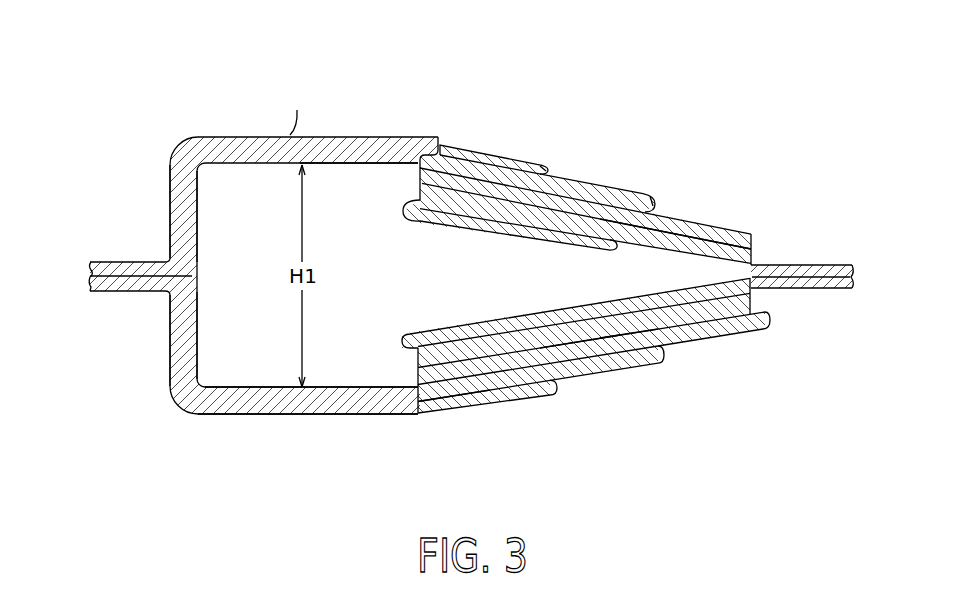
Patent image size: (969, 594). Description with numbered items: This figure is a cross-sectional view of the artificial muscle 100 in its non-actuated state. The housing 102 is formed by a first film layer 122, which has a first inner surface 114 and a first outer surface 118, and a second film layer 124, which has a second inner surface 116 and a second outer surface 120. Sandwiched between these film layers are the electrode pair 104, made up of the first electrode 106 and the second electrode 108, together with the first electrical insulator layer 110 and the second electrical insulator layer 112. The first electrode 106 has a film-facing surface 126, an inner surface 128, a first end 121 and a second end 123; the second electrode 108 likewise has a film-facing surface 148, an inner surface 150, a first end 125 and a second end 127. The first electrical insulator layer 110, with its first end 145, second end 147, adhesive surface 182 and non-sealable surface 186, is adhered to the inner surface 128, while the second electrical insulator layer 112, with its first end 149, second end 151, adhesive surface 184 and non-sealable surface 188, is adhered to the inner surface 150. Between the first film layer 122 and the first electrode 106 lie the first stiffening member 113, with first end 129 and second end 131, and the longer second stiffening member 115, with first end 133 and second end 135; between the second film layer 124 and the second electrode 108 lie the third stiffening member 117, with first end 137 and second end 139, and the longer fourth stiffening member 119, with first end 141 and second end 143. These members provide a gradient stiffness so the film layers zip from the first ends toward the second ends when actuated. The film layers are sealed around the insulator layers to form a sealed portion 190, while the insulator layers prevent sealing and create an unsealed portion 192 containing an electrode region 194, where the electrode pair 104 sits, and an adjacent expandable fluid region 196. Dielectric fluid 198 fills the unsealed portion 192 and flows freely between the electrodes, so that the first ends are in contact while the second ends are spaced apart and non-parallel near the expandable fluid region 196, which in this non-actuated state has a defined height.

The artificial muscle 100 is at (137, 95).
The housing 102 is at (213, 127).
The electrode pair 104 is at (785, 333).
The first electrode 106 is at (713, 320).
The second electrode 108 is at (735, 235).
The first electrical insulator layer 110 is at (491, 292).
The second electrical insulator layer 112 is at (450, 240).
The first stiffening member 113 is at (472, 390).
The first inner surface 114 is at (310, 392).
The second stiffening member 115 is at (513, 367).
The second inner surface 116 is at (322, 160).
The third stiffening member 117 is at (523, 170).
The first outer surface 118 is at (215, 416).
The fourth stiffening member 119 is at (610, 192).
The second outer surface 120 is at (304, 249).
The first end 121 is at (727, 338).
The first film layer 122 is at (242, 432).
The second end 123 is at (408, 362).
The second film layer 124 is at (263, 137).
The first end 125 is at (753, 240).
The film-facing surface 126 is at (687, 330).
The second end 127 is at (403, 211).
The inner surface 128 is at (722, 289).
The first end 129 is at (540, 382).
The second end 131 is at (415, 392).
The first end 133 is at (653, 347).
The second end 135 is at (418, 380).
The first end 137 is at (540, 172).
The second end 139 is at (438, 148).
The first end 141 is at (655, 205).
The second end 143 is at (420, 175).
The first end 145 is at (753, 296).
The second end 147 is at (195, 275).
The film-facing surface 148 is at (703, 220).
The first end 149 is at (752, 262).
The inner surface 150 is at (611, 250).
The second end 151 is at (195, 279).
The adhesive surface 182 is at (180, 340).
The adhesive surface 184 is at (178, 213).
The non-sealable surface 186 is at (197, 370).
The non-sealable surface 188 is at (197, 236).
The sealed portion 190 is at (63, 276).
The unsealed portion 192 is at (590, 400).
The electrode region 194 is at (630, 390).
The expandable fluid region 196 is at (353, 427).
The dielectric fluid 198 is at (382, 163).